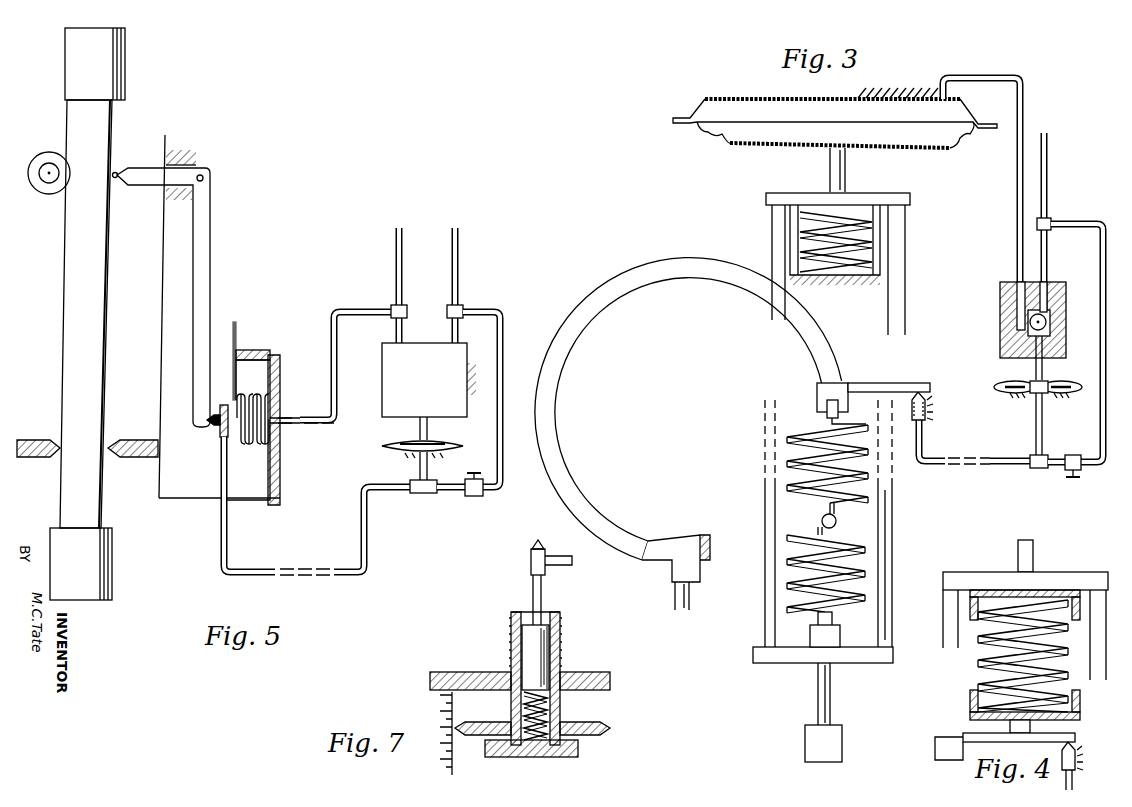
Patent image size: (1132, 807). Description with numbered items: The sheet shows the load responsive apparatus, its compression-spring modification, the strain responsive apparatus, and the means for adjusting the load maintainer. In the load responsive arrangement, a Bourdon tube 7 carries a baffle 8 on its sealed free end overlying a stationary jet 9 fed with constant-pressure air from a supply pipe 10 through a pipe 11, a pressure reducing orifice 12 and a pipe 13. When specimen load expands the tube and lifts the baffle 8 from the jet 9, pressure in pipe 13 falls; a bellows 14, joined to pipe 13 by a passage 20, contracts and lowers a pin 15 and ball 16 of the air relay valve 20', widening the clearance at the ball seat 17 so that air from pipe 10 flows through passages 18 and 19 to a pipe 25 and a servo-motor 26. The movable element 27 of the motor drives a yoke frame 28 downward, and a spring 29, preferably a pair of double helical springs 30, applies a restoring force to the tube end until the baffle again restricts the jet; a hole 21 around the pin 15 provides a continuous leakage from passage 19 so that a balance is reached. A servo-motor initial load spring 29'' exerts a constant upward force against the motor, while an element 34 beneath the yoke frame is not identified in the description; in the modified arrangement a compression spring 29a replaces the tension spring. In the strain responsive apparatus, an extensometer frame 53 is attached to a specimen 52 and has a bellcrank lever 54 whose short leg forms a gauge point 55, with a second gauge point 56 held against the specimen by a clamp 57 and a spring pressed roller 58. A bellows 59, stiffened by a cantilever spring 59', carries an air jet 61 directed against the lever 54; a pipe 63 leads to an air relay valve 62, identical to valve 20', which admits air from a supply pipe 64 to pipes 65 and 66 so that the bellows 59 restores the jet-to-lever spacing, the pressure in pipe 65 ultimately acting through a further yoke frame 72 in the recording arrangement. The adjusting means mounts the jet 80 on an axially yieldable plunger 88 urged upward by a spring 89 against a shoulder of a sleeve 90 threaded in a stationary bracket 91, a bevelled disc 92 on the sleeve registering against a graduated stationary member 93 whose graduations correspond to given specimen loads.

In FIG. 3, the Bourdon tube 7 is at (700, 272).
In FIG. 4, the Bourdon tube 7 is at (938, 740).
In FIG. 3, the baffle 8 is at (878, 385).
In FIG. 4, the baffle 8 is at (976, 732).
In FIG. 3, the jet 9 is at (929, 410).
In FIG. 4, the jet 9 is at (1078, 762).
In FIG. 3, the supply pipe 10 is at (1047, 197).
In FIG. 3, the pipe 11 is at (1105, 324).
In FIG. 3, the pressure reducing orifice 12 is at (1083, 456).
In FIG. 3, the pipe 13 is at (998, 460).
In FIG. 3, the bellows 14 is at (1004, 385).
In FIG. 3, the pin 15 is at (1037, 370).
In FIG. 3, the ball 16 is at (1046, 320).
In FIG. 3, the ball seat 17 is at (1050, 312).
In FIG. 3, the passage 18 is at (1046, 305).
In FIG. 3, the passage 19 is at (1008, 305).
In FIG. 3, the passage 20 is at (1027, 424).
In FIG. 3, the air relay valve 20' is at (967, 334).
In FIG. 3, the hole 21 is at (1067, 343).
In FIG. 3, the pipe 25 is at (1017, 244).
In FIG. 3, the servo-motor 26 is at (775, 98).
In FIG. 3, the movable element 27 is at (765, 146).
In FIG. 3, the yoke frame 28 is at (776, 231).
In FIG. 4, the yoke frame 28 is at (1103, 581).
In FIG. 3, the spring 29 is at (870, 569).
In FIG. 4, the compression spring 29a is at (972, 677).
In FIG. 3, the servo-motor initial load spring 29'' is at (874, 242).
In FIG. 3, the double helical springs 30 is at (790, 478).
In FIG. 3, the rod 34 is at (832, 701).
In FIG. 5, the specimen 52 is at (76, 131).
In FIG. 5, the extensometer frame 53 is at (162, 344).
In FIG. 5, the strain responsive movable lever 54 is at (204, 284).
In FIG. 5, the gauge point 55 is at (112, 176).
In FIG. 5, the gauge point 56 is at (126, 438).
In FIG. 5, the clamp 57 is at (38, 438).
In FIG. 5, the spring pressed roller 58 is at (46, 188).
In FIG. 5, the bellows 59 is at (280, 430).
In FIG. 5, the spring 59' is at (239, 361).
In FIG. 5, the air jet 61 is at (222, 413).
In FIG. 5, the air relay valve 62 is at (380, 384).
In FIG. 5, the pipe 63 is at (255, 571).
In FIG. 5, the pipe 64 is at (462, 259).
In FIG. 5, the pipe 65 is at (398, 254).
In FIG. 5, the pipe 66 is at (335, 338).
In FIG. 5, the yoke frame 72 is at (478, 498).
In FIG. 7, the air jet 80 is at (530, 561).
In FIG. 7, the axially yieldable plunger 88 is at (561, 633).
In FIG. 7, the spring 89 is at (548, 712).
In FIG. 7, the sleeve 90 is at (560, 653).
In FIG. 7, the stationary bracket 91 is at (588, 675).
In FIG. 7, the disc 92 is at (603, 725).
In FIG. 7, the graduated stationary member 93 is at (455, 716).